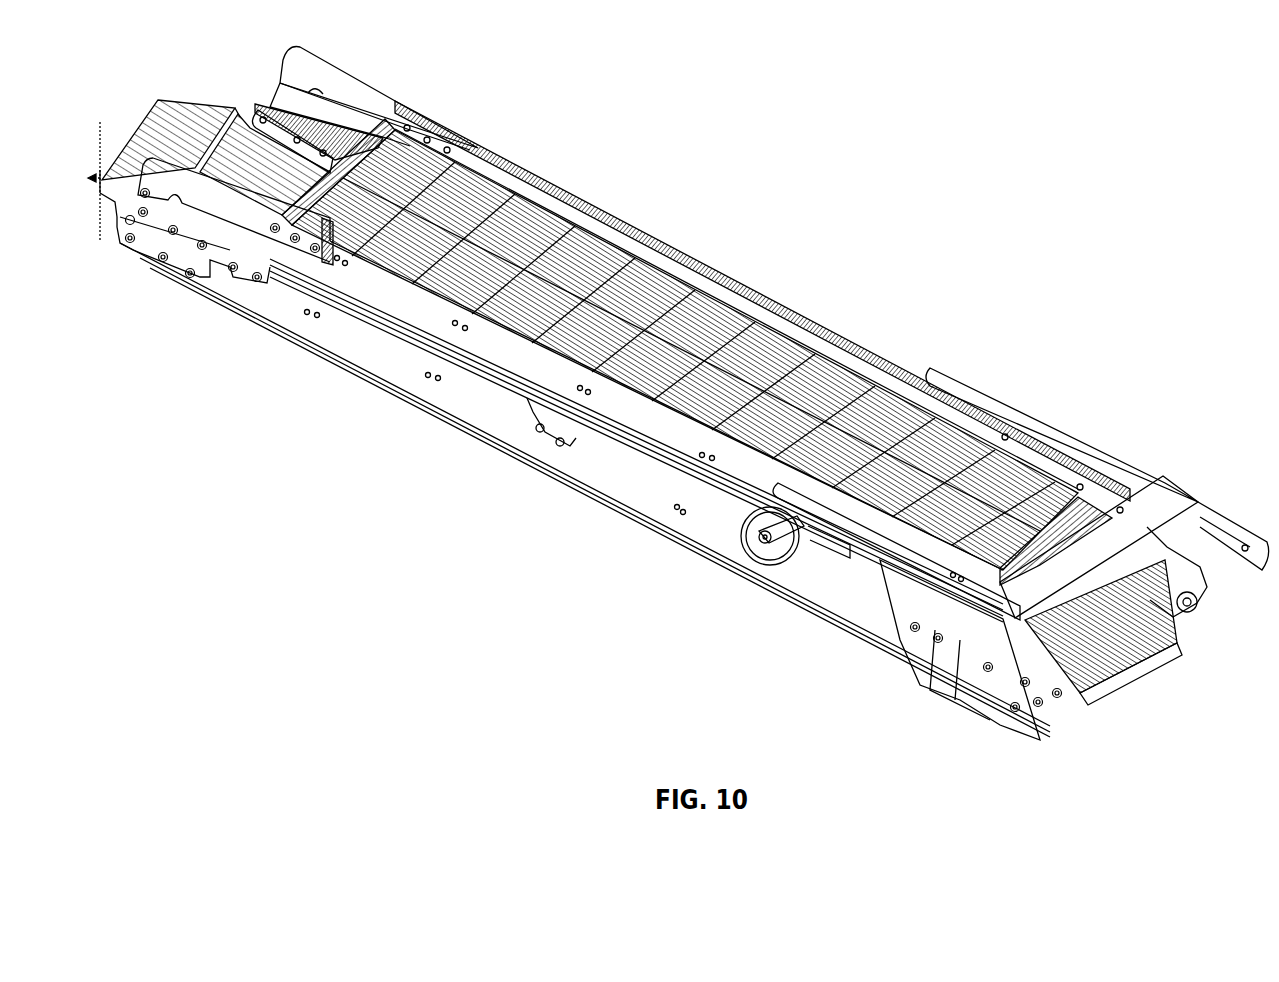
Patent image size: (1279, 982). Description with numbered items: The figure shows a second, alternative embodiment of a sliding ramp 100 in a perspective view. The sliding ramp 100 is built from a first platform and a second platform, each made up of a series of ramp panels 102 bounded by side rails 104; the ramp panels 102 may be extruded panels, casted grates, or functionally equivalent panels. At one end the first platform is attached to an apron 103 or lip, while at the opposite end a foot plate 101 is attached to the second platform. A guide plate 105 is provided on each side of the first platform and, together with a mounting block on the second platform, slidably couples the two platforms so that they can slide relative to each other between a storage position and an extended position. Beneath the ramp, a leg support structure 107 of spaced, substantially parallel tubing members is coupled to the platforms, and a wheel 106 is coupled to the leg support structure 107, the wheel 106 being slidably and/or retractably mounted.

The sliding ramp 100 is at (678, 386).
The foot plate 101 is at (1078, 496).
The ramp panels 102 is at (762, 357).
The apron 103 is at (198, 114).
The side rails 104 is at (432, 309).
The guide plate 105 is at (468, 373).
The wheel 106 is at (749, 545).
The leg support structure 107 is at (917, 582).